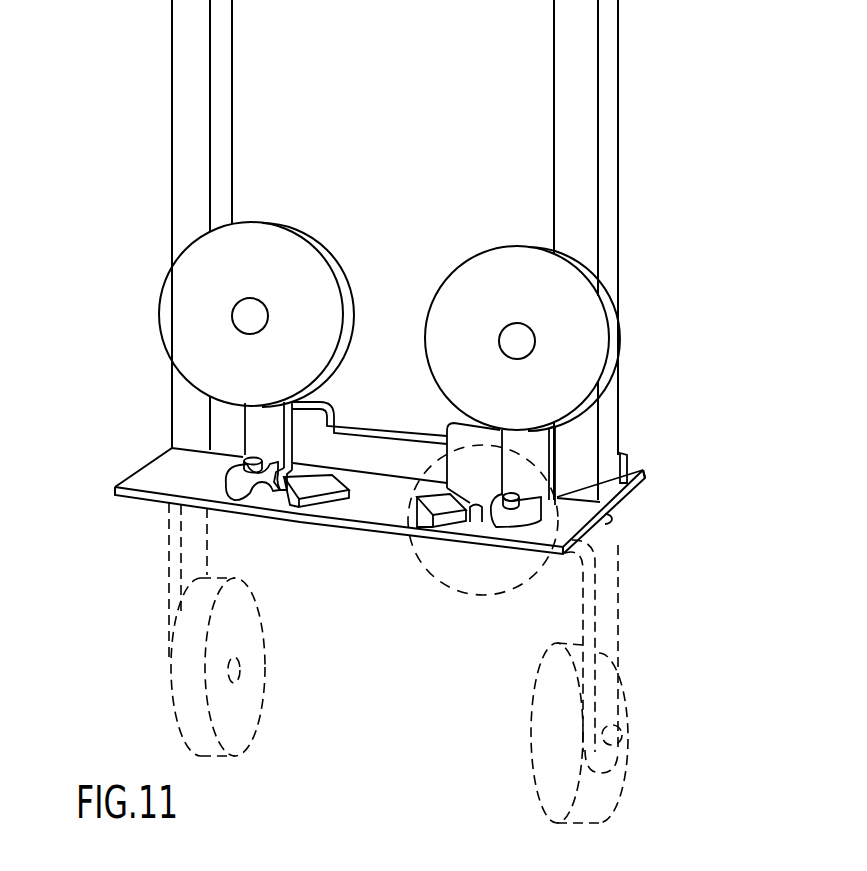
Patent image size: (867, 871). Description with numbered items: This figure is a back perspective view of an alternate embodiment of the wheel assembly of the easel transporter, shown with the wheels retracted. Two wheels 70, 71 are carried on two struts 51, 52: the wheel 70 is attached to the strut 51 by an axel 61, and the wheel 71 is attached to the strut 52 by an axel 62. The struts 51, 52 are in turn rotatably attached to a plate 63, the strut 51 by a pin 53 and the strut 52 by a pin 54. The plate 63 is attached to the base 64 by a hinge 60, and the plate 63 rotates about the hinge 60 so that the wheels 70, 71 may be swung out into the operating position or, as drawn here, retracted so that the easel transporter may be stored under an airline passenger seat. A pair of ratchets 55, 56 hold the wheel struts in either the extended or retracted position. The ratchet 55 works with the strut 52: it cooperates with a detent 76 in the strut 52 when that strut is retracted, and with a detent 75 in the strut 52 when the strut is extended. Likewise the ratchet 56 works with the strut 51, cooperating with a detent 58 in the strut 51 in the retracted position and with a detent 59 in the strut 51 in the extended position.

The strut 51 is at (555, 442).
The strut 52 is at (245, 415).
The pin 53 is at (251, 458).
The pin 54 is at (557, 473).
The ratchet 55 is at (335, 507).
The ratchet 56 is at (440, 525).
The detent 58 is at (472, 510).
The detent 59 is at (500, 510).
The hinge 60 is at (613, 520).
The axel 61 is at (232, 316).
The axel 62 is at (532, 330).
The plate 63 is at (128, 497).
The base 64 is at (647, 478).
The wheel 70 is at (303, 232).
The wheel 71 is at (478, 255).
The detent 75 is at (250, 500).
The detent 76 is at (326, 450).